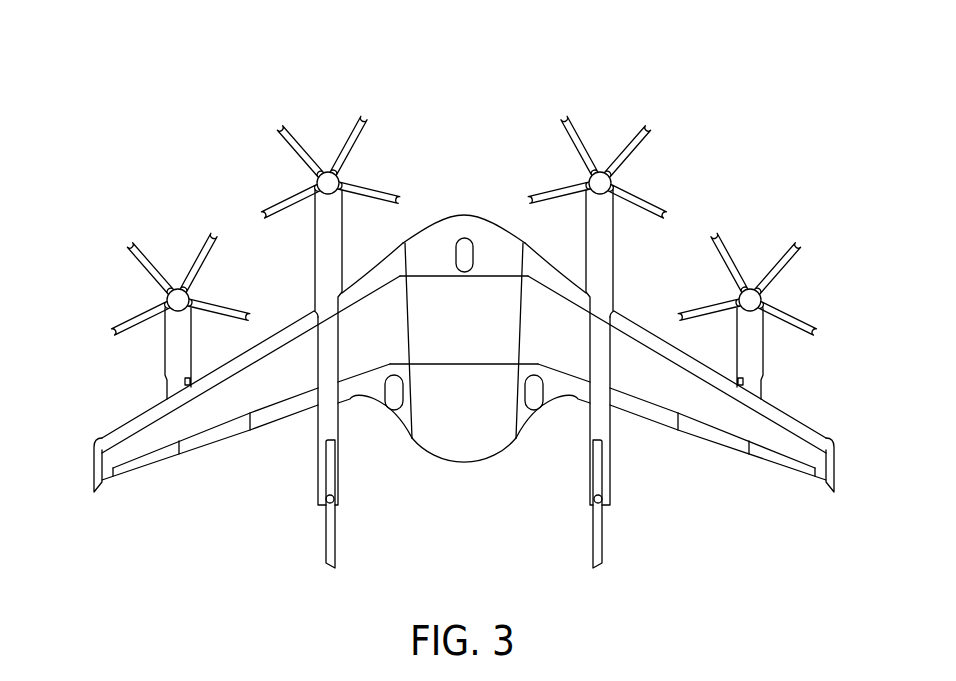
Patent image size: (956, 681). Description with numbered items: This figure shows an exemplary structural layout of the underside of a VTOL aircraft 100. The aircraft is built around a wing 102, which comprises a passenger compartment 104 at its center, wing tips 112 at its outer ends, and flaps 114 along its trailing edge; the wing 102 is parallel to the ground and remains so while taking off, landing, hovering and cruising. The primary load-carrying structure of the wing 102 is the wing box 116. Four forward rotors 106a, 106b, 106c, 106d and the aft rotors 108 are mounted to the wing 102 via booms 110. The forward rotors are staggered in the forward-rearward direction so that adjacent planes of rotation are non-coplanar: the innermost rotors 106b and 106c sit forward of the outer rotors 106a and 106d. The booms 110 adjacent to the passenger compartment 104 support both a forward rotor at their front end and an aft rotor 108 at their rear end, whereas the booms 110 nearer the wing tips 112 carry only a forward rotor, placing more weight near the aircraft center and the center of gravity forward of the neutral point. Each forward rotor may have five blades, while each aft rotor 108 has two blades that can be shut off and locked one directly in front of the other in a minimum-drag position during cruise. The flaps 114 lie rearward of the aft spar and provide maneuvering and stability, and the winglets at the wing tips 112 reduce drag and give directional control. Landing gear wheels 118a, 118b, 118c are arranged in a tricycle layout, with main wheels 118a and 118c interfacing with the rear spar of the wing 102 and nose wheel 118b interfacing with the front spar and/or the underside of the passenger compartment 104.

The aircraft 100 is at (528, 88).
The wing 102 is at (713, 418).
The passenger compartment 104 is at (473, 440).
The forward rotor 106a is at (175, 293).
The forward rotor 106b is at (326, 172).
The forward rotor 106c is at (604, 172).
The forward rotor 106d is at (763, 300).
The aft rotor 108 is at (322, 514).
The boom 110 is at (320, 441).
The wing tip 112 is at (94, 467).
The flap 114 is at (150, 456).
The wing box 116 is at (645, 405).
The main landing gear wheel 118a is at (393, 402).
The nose landing gear wheel 118b is at (466, 238).
The main landing gear wheel 118c is at (535, 402).